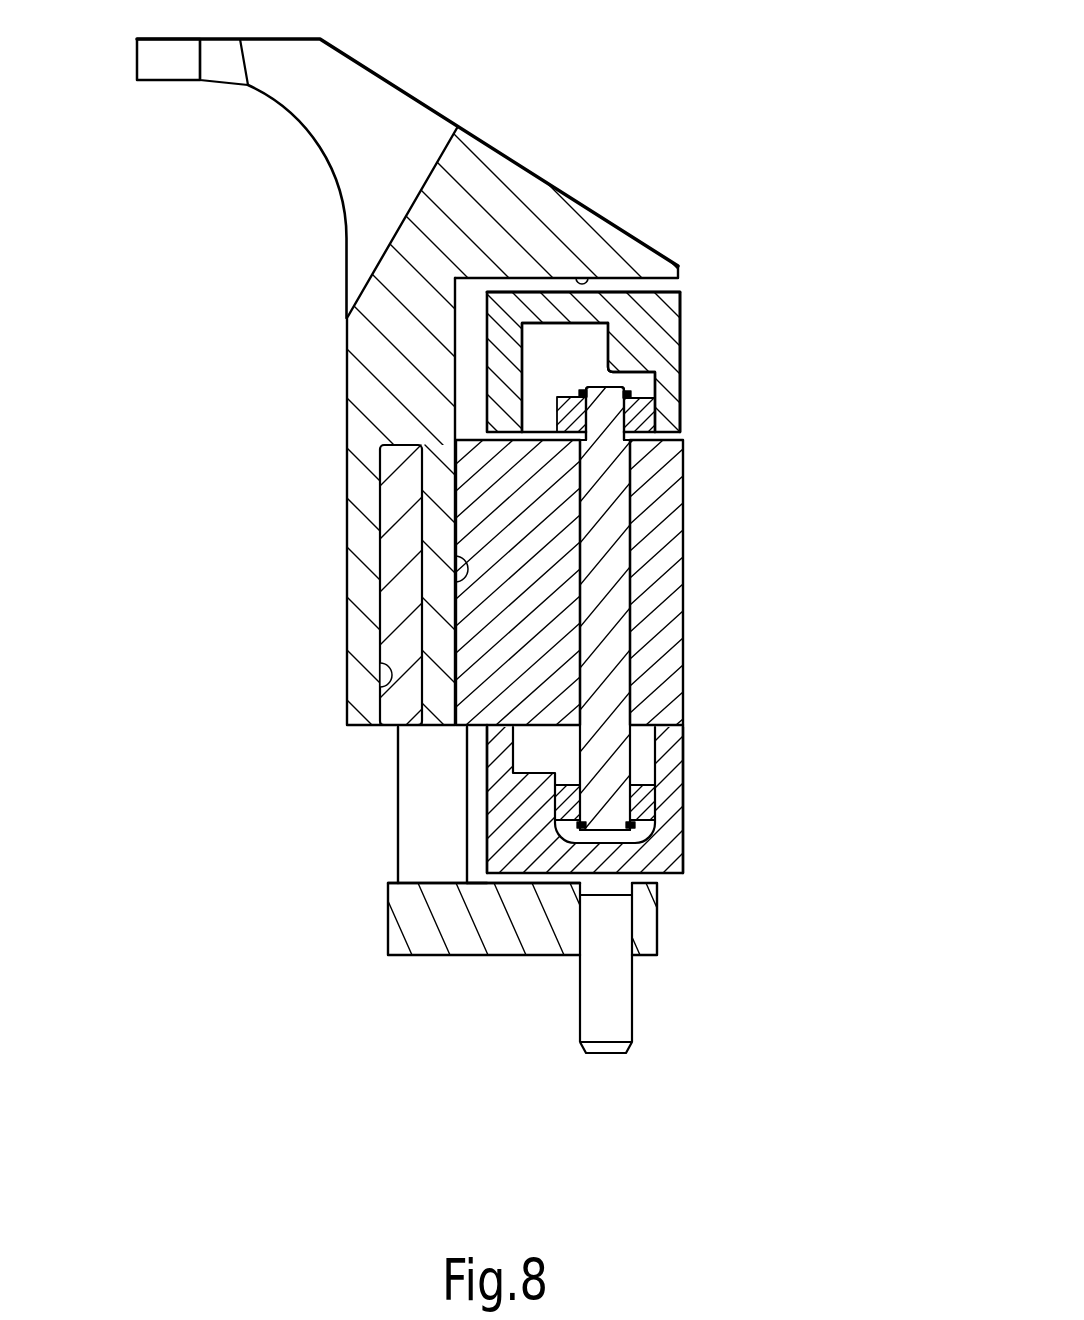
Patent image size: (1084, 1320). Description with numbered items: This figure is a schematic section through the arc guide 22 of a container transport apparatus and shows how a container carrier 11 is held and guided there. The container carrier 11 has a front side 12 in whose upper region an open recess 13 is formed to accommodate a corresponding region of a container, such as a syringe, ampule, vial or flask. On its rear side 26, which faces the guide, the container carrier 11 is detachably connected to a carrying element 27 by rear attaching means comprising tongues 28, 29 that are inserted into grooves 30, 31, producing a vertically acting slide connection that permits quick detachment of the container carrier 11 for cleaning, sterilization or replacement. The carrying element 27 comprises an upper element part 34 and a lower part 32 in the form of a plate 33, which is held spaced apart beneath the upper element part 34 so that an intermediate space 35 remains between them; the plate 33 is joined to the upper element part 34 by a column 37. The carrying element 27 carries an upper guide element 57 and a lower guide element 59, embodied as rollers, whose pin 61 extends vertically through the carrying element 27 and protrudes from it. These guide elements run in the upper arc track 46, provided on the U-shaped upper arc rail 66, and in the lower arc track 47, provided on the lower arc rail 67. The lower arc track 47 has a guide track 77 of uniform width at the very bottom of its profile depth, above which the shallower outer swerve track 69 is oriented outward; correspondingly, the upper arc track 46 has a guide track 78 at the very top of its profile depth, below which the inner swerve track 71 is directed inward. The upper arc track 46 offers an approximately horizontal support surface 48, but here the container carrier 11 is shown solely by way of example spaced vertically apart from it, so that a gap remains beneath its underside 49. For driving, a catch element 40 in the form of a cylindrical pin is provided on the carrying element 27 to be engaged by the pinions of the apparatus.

The container carrier 11 is at (698, 272).
The front side 12 is at (347, 413).
The open recess 13 is at (178, 61).
The arc guide 22 is at (690, 303).
The rear side 26 is at (453, 588).
The carrying element 27 is at (688, 662).
The tongue 28 is at (442, 619).
The tongue 29 is at (367, 513).
The groove 30 is at (350, 718).
The groove 31 is at (425, 826).
The lower part 32 is at (658, 932).
The plate 33 is at (508, 927).
The upper element part 34 is at (643, 560).
The intermediate space 35 is at (477, 860).
The column 37 is at (399, 727).
The catch element 40 is at (610, 1007).
The upper arc track 46 is at (670, 254).
The lower arc track 47 is at (637, 762).
The support surface 48 is at (522, 287).
The underside 49 is at (562, 343).
The upper guide element 57 is at (640, 417).
The lower guide element 59 is at (637, 802).
The pin 61 is at (603, 620).
The upper arc rail 66 is at (632, 343).
The lower arc rail 67 is at (665, 840).
The outer swerve track 69 is at (443, 687).
The inner swerve track 71 is at (640, 385).
The guide track 77 is at (572, 830).
The guide track 78 is at (592, 340).